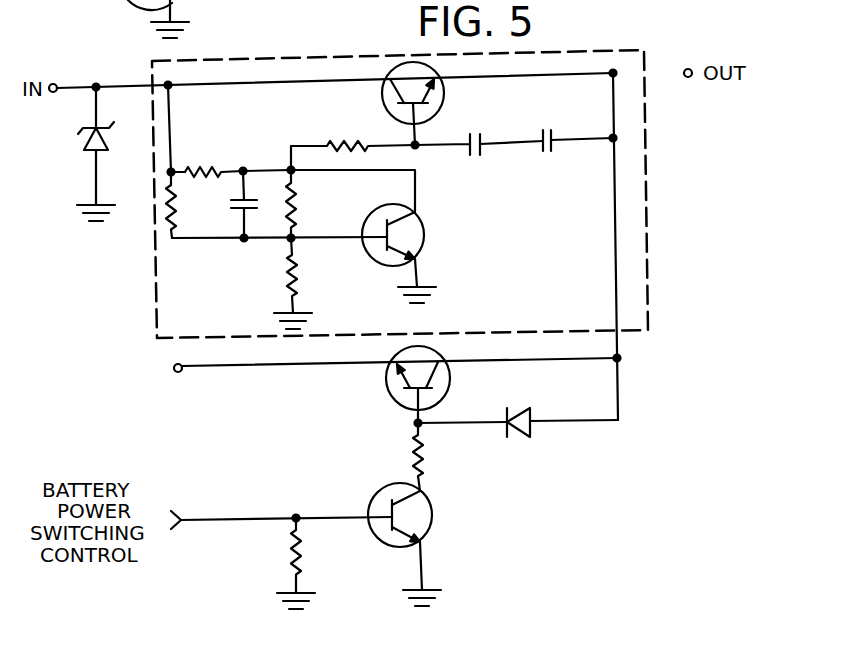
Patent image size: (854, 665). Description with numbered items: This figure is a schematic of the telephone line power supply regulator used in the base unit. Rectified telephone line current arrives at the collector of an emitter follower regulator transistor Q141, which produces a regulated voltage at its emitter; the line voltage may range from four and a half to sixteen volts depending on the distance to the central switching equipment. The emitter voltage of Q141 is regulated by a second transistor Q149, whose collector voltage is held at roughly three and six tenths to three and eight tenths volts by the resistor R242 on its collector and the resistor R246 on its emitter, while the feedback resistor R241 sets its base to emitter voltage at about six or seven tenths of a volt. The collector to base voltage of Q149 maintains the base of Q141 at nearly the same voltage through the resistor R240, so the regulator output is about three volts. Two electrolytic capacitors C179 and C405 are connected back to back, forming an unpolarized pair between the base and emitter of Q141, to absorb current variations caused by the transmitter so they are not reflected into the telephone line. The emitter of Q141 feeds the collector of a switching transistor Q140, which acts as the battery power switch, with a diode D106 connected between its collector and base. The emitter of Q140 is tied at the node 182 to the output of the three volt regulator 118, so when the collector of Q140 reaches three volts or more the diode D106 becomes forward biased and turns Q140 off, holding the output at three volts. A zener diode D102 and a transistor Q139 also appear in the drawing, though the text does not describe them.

The zener diode D102 is at (88, 150).
The feedback resistor R241 is at (207, 166).
The resistor R242 is at (297, 196).
The resistor R246 is at (292, 265).
The resistor R240 is at (347, 108).
The electrolytic capacitor C179 is at (468, 157).
The electrolytic capacitor C405 is at (546, 153).
The emitter follower regulator transistor Q141 is at (445, 101).
The transistor Q149 is at (424, 235).
The switching transistor Q140 is at (395, 380).
The transistor Q139 is at (432, 520).
The diode D106 is at (526, 410).
The node 182 is at (178, 372).
The three volt regulator 118 is at (86, 373).